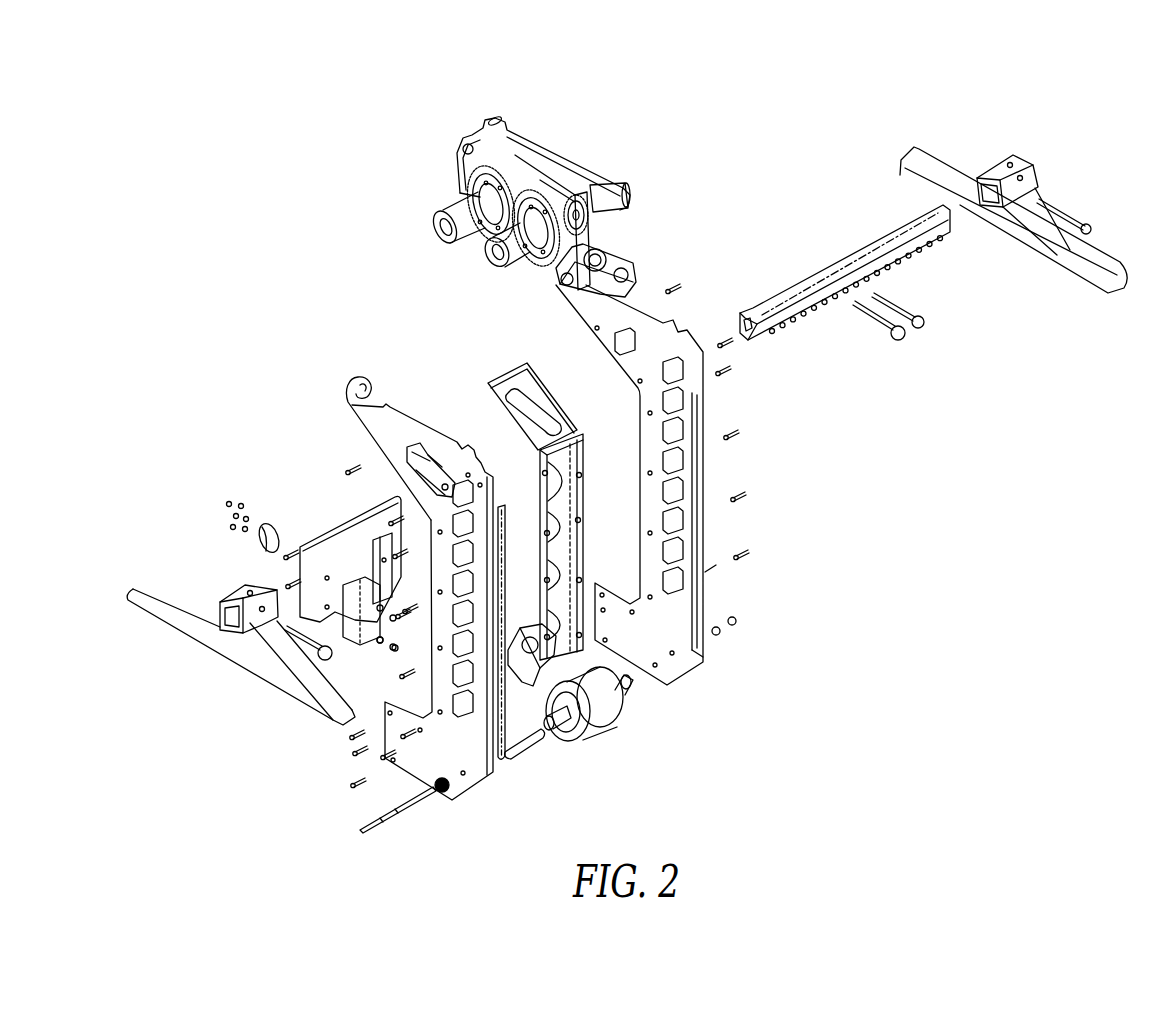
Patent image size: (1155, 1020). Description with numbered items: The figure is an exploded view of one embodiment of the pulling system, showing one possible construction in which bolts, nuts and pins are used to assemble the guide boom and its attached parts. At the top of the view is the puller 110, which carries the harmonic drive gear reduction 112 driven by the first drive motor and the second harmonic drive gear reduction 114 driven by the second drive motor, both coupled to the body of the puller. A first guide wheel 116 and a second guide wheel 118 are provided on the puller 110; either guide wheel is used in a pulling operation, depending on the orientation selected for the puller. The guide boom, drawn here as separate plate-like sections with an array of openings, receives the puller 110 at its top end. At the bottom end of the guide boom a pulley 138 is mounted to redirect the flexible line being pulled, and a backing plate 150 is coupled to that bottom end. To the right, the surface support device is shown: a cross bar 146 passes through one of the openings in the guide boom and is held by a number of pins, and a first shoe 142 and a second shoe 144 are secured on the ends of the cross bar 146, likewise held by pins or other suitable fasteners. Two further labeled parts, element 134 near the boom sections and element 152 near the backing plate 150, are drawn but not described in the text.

The puller 110 is at (537, 168).
The harmonic drive gear reduction 112 is at (441, 228).
The second harmonic drive gear reduction 114 is at (492, 260).
The first guide wheel 116 is at (588, 192).
The second guide wheel 118 is at (612, 245).
The bracket 134 is at (406, 464).
The pulley 138 is at (615, 725).
The first shoe 142 is at (1022, 248).
The second shoe 144 is at (172, 617).
The cross bar 146 is at (838, 263).
The backing plate 150 is at (350, 535).
The cap 152 is at (270, 523).